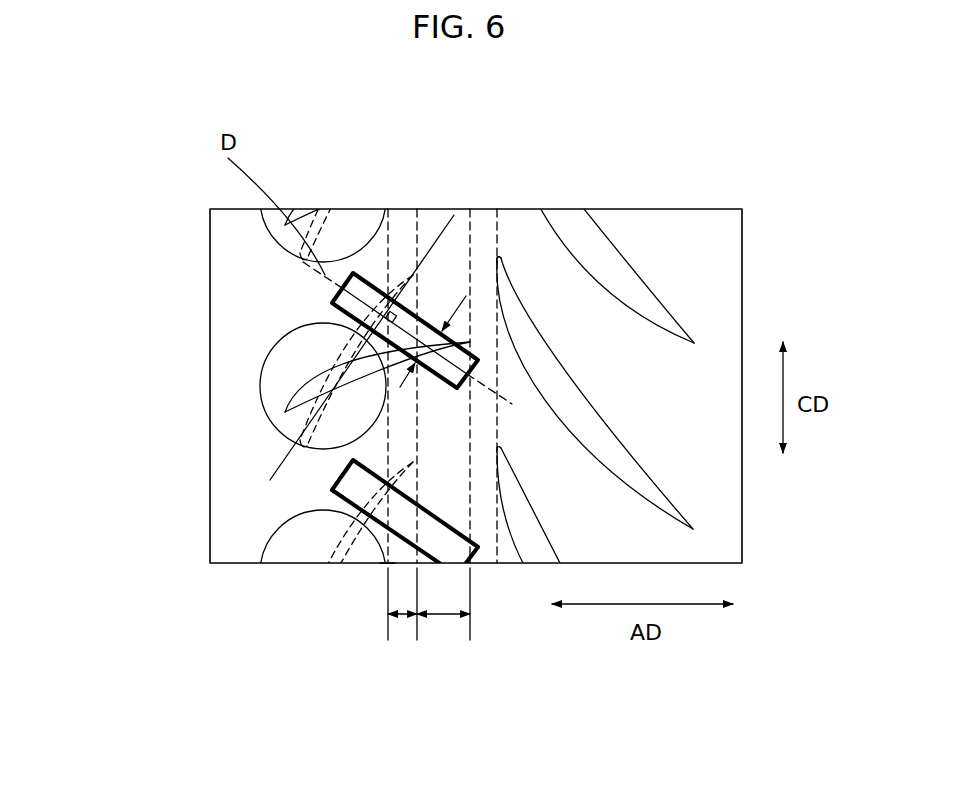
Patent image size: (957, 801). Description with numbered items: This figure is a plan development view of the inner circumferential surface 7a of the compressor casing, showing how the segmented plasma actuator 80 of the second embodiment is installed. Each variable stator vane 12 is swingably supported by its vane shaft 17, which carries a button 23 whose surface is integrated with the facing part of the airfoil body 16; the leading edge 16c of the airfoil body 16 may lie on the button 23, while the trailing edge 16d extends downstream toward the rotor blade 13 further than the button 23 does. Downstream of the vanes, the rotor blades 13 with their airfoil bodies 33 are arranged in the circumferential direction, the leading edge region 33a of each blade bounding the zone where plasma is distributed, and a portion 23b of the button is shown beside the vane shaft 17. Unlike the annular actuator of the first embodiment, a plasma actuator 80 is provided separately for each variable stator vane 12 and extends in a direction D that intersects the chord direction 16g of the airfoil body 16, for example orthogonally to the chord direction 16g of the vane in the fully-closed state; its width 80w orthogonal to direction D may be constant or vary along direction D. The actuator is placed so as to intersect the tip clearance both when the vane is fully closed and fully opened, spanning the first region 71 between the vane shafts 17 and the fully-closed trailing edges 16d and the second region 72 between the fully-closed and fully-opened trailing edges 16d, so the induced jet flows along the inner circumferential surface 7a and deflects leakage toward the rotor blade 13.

The inner circumferential surface 7a is at (730, 280).
The vane shaft 17 is at (287, 347).
The button 23 is at (241, 386).
The variable stator vane 12 is at (303, 393).
The airfoil body 16 is at (283, 283).
The plasma actuator 80 is at (330, 302).
The width of the plasma actuator 80w is at (459, 300).
The trailing edge 16d is at (412, 270).
The leading edge 16c is at (298, 448).
The chord direction 16g is at (436, 238).
The airfoil body 33 is at (607, 243).
The rotor blade 13 is at (597, 359).
The blade leading edge 33a is at (499, 257).
The sheet rear surface 23b is at (386, 563).
The first region 71 is at (400, 617).
The second region 72 is at (443, 617).